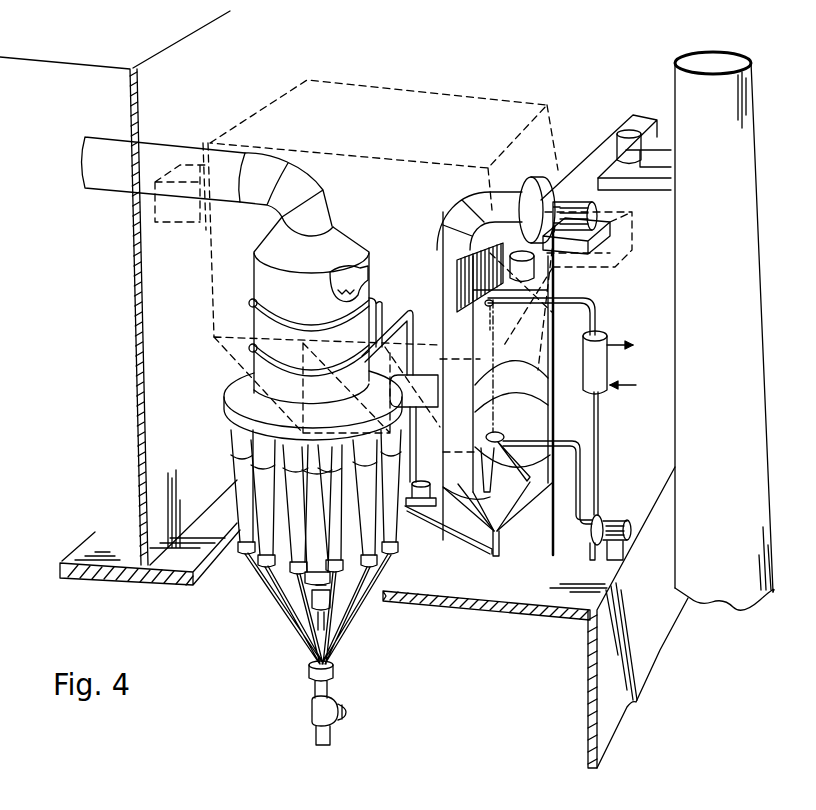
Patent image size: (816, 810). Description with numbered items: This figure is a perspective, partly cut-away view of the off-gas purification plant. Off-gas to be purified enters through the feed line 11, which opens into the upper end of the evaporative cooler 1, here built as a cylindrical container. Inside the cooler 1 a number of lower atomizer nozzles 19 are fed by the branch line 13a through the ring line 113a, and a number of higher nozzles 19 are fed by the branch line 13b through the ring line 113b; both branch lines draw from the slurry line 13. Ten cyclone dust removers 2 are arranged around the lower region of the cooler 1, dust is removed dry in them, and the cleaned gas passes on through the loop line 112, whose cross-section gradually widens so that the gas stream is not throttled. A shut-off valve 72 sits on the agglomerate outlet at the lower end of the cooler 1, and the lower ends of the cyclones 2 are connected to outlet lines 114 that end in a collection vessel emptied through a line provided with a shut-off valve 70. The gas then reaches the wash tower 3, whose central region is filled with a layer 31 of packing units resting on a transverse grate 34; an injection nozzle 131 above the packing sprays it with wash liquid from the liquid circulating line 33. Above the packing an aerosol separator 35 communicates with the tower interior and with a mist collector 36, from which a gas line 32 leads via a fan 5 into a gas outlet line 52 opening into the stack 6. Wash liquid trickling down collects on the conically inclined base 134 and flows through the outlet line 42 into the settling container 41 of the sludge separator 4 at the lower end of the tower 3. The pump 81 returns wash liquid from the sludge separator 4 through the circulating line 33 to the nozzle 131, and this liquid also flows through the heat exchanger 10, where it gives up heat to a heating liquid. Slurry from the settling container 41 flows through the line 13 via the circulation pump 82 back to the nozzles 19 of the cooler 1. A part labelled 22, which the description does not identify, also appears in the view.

The evaporative cooler 1 is at (356, 228).
The cyclone dust remover 2 is at (230, 463).
The wash tower 3 is at (430, 256).
The sludge separator 4 is at (468, 513).
The fan 5 is at (547, 188).
The stack 6 is at (747, 158).
The heat exchanger 10 is at (602, 365).
The off-gas feed line 11 is at (165, 152).
The slurry line 13 is at (465, 547).
The branch line 13a is at (399, 322).
The branch line 13b is at (384, 304).
The atomizer nozzle 19 is at (363, 290).
The outlet pipe 22 is at (428, 377).
The layer of packing units 31 is at (480, 377).
The gas line 32 is at (448, 217).
The liquid circulating line 33 is at (583, 300).
The transverse grate 34 is at (547, 372).
The aerosol separator 35 is at (542, 263).
The mist collector 36 is at (526, 210).
The settling container 41 is at (508, 505).
The outlet line 42 is at (493, 432).
The gas outlet line 52 is at (648, 190).
The shut-off valve 70 is at (336, 700).
The shut-off valve 72 is at (331, 607).
The pump 81 is at (620, 518).
The circulation pump 82 is at (425, 482).
The loop line 112 is at (225, 407).
The ring line 113a is at (250, 348).
The ring line 113b is at (250, 308).
The outlet lines 114 is at (287, 607).
The injection nozzle 131 is at (520, 318).
The base 134 is at (530, 421).